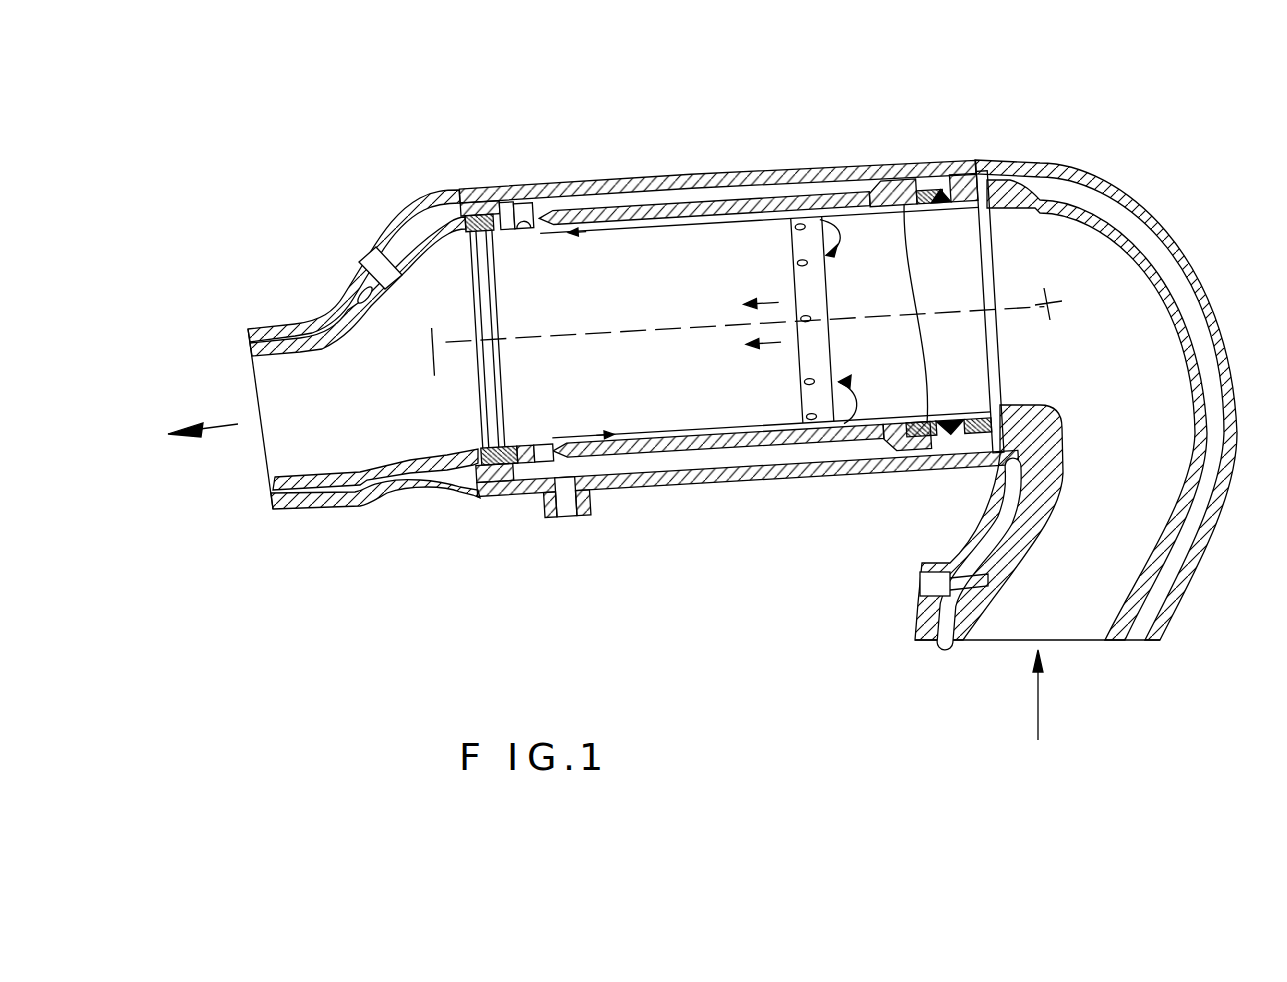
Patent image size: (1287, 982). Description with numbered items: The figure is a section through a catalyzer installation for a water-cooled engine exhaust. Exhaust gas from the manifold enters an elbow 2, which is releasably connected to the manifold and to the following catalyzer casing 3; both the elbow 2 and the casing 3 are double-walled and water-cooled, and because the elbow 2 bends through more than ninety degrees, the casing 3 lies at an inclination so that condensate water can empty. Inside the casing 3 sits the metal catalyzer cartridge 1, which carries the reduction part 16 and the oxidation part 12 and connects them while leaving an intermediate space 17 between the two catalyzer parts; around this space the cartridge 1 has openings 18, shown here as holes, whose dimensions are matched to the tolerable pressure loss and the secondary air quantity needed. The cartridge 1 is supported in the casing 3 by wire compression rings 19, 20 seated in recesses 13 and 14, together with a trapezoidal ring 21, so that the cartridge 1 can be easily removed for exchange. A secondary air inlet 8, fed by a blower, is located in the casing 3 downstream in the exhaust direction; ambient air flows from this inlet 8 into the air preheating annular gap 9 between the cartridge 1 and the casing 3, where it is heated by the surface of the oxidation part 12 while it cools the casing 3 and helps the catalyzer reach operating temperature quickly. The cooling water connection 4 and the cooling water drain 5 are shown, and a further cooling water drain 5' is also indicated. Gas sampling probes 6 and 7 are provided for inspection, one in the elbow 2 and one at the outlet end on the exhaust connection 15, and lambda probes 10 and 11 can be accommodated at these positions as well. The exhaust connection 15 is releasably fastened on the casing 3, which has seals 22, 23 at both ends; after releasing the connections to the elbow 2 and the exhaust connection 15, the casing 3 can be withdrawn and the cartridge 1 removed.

The metal catalyzer cartridge 1 is at (672, 454).
The elbow 2 is at (1094, 180).
The catalyzer casing 3 is at (645, 190).
The cooling water connection 4 is at (1128, 641).
The cooling water drain 5 is at (989, 553).
The further cooling water drain 5' is at (567, 525).
The gas sampling probe 6 is at (920, 585).
The gas sampling probe 7 is at (362, 258).
The secondary air inlet 8 is at (533, 220).
The air preheating annular gap 9 is at (622, 229).
The lambda probe 10 is at (1048, 300).
The lambda probe 11 is at (420, 338).
The oxidation catalyzer part 12 is at (740, 420).
The recess 13 is at (888, 192).
The recess 14 is at (478, 208).
The exhaust connection 15 is at (352, 498).
The reduction catalyzer part 16 is at (912, 265).
The intermediate space 17 is at (822, 349).
The openings 18 is at (810, 321).
The wire compression ring 19 is at (922, 198).
The wire compression ring 20 is at (506, 200).
The trapezoidal ring 21 is at (946, 442).
The seal 22 is at (978, 186).
The seal 23 is at (484, 497).